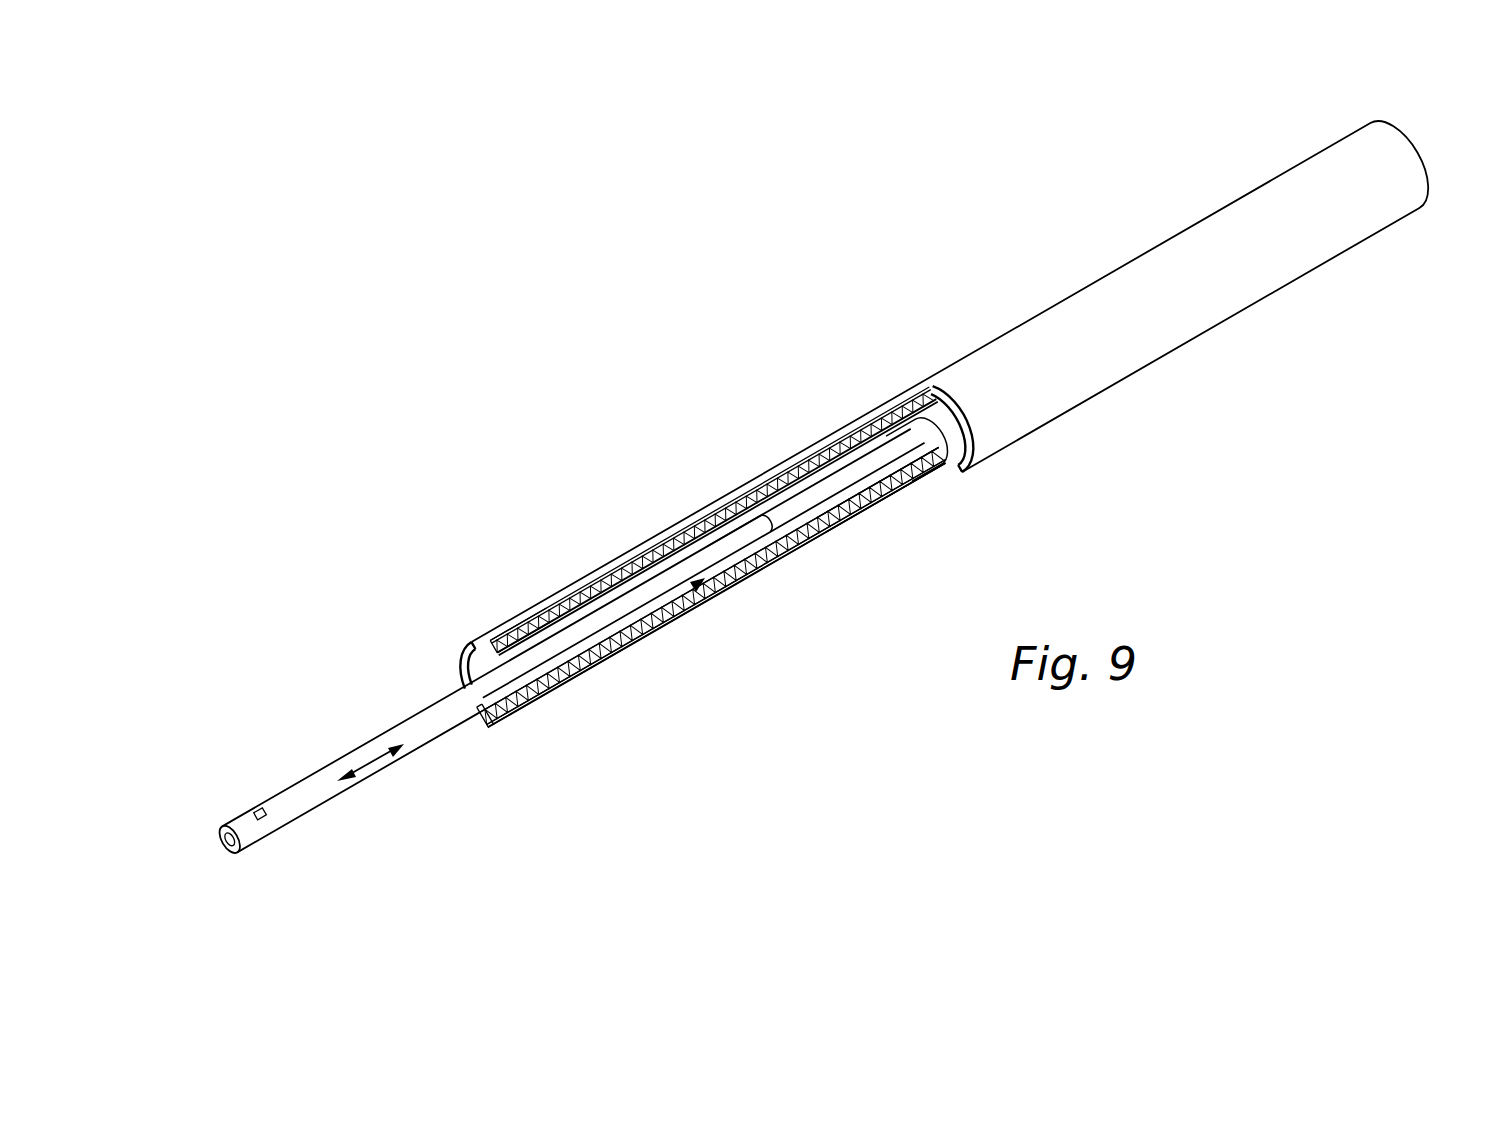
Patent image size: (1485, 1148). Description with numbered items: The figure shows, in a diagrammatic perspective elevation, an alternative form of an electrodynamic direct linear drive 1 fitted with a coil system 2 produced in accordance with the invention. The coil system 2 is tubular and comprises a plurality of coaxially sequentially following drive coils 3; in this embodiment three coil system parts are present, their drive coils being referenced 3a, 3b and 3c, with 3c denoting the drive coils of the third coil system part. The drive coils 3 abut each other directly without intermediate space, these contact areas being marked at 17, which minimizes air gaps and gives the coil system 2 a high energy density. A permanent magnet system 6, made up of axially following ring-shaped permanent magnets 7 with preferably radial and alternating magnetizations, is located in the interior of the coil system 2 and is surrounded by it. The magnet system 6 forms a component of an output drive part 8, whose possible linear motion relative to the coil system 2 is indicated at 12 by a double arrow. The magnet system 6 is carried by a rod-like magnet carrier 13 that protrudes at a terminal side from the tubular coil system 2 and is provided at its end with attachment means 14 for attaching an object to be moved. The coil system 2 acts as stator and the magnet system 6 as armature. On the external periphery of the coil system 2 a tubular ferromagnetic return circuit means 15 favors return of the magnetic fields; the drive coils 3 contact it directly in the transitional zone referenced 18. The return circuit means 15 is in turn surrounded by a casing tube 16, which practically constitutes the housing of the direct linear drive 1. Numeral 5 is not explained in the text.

The electrodynamic direct linear drive 1 is at (1034, 284).
The coil system 2 is at (770, 570).
The drive coils 3 is at (548, 708).
The drive coils of first coil system part 3a is at (672, 625).
The drive coils of second coil system part 3b is at (698, 612).
The drive coils of third coil system part 3c is at (728, 605).
The slide rod 5 is at (182, 873).
The permanent magnet system 6 is at (912, 477).
The permanent magnets 7 is at (827, 537).
The output drive part 8 is at (705, 584).
The double arrow 12 is at (372, 764).
The magnet carrier 13 is at (725, 553).
The attachment means 14 is at (237, 852).
The return circuit means 15 is at (886, 415).
The casing tube 16 is at (1153, 356).
The contact areas 17 is at (590, 588).
The transitional zone 18 is at (820, 465).